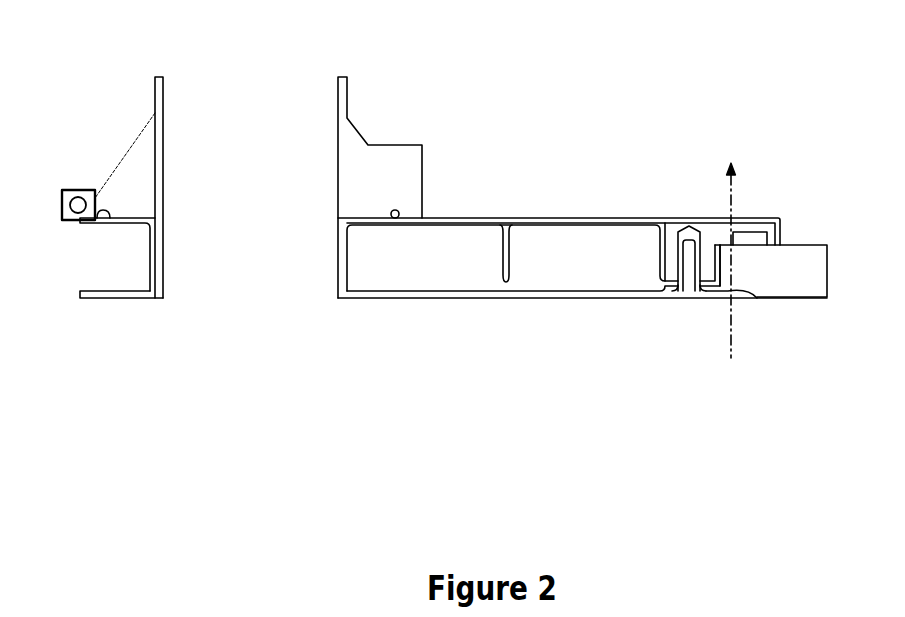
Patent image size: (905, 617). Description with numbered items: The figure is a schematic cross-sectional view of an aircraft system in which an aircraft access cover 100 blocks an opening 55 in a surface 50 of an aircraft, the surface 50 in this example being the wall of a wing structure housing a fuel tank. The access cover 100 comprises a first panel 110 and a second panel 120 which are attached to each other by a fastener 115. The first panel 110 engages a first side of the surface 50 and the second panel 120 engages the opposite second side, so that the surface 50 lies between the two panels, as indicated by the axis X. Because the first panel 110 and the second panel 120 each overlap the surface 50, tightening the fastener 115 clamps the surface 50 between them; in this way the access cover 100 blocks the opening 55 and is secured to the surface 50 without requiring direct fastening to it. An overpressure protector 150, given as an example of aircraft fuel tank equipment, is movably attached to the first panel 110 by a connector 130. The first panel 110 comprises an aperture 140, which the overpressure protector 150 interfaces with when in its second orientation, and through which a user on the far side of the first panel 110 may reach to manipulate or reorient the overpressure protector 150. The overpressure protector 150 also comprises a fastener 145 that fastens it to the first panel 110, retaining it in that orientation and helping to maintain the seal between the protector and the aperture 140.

The surface 50 is at (785, 275).
The opening 55 is at (576, 359).
The aircraft access cover 100 is at (557, 137).
The first panel 110 is at (580, 221).
The fastener 115 is at (690, 295).
The second panel 120 is at (438, 297).
The connector 130 is at (80, 190).
The aperture 140 is at (247, 303).
The fastener 145 is at (398, 213).
The overpressure protector 150 is at (369, 91).